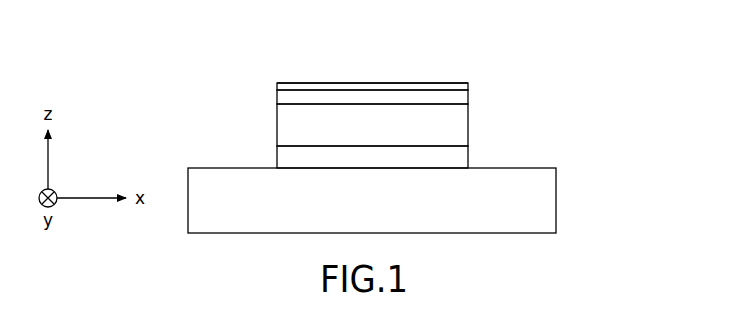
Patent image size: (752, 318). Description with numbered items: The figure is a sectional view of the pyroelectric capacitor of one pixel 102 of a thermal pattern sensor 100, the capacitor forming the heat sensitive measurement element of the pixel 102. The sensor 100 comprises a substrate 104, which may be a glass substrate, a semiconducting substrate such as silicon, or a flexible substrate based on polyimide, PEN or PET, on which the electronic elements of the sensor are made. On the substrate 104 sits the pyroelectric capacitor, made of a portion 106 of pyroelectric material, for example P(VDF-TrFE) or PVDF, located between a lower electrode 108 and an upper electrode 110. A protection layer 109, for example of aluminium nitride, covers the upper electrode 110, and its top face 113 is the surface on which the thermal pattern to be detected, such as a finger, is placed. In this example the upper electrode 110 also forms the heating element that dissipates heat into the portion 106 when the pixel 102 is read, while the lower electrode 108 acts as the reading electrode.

The thermal pattern sensor 100 is at (417, 126).
The pixel 102 is at (389, 93).
The substrate 104 is at (538, 200).
The portion of pyroelectric material 106 is at (458, 124).
The lower electrode 108 is at (458, 161).
The protection layer 109 is at (417, 87).
The upper electrode 110 is at (285, 97).
The top face 113 is at (330, 81).